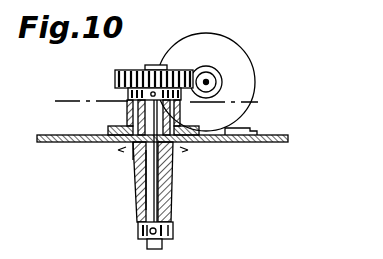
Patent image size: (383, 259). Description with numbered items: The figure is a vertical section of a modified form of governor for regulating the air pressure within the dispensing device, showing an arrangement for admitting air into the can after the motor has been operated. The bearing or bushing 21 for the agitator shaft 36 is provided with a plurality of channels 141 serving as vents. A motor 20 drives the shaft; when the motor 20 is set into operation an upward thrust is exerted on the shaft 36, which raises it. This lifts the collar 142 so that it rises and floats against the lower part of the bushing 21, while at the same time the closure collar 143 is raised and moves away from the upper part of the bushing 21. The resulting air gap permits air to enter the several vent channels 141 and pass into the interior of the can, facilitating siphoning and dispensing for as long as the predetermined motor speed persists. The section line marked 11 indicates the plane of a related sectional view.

The wheel 20 is at (242, 64).
The gear 143 is at (128, 96).
The shaft sleeve 21 is at (177, 175).
The bearing tube 141 is at (133, 154).
The shaft 36 is at (151, 202).
The nut 142 is at (175, 233).
The section line 11- 11 is at (54, 88).